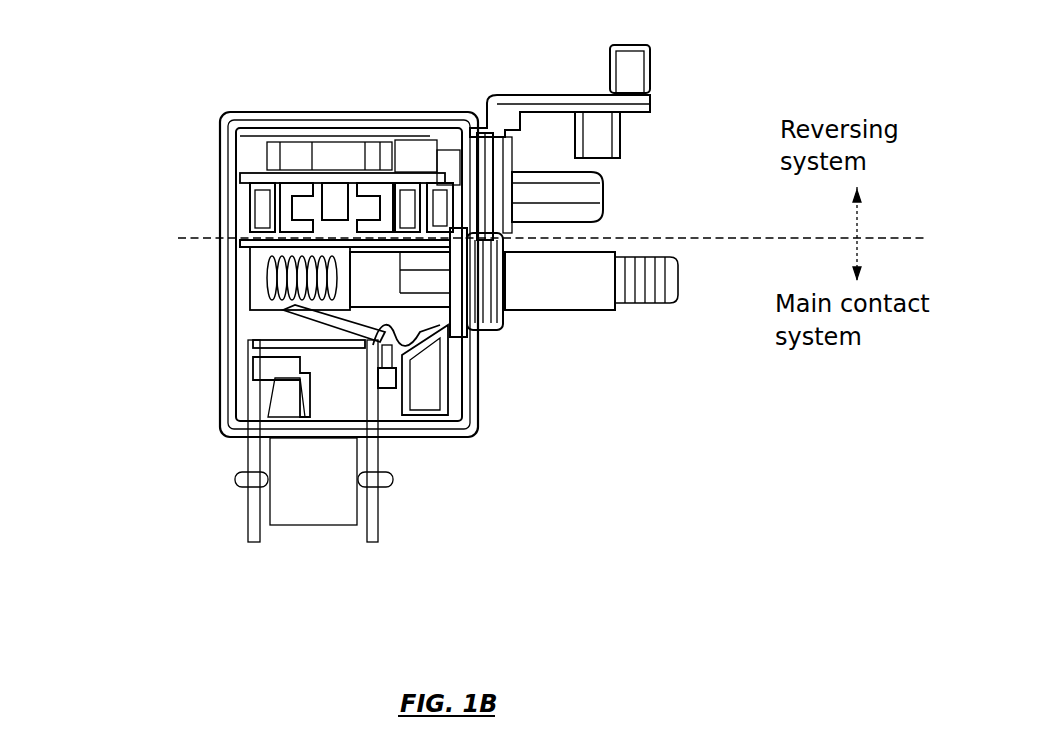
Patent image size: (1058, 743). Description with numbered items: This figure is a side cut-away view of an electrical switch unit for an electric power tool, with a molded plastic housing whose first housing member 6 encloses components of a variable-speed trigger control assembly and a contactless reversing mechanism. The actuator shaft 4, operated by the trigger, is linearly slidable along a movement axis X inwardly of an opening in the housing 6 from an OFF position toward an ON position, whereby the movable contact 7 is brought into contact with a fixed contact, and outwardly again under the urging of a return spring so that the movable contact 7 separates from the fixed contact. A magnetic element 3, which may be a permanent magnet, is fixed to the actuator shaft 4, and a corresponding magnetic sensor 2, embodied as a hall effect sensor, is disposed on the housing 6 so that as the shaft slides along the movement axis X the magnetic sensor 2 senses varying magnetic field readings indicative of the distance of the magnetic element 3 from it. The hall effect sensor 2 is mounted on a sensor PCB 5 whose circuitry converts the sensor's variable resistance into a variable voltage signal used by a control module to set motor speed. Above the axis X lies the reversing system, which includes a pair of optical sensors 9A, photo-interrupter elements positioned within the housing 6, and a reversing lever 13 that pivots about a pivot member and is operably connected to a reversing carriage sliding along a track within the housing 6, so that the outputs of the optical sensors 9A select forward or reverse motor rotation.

The movement axis X is at (173, 232).
The magnetic sensor 2 is at (237, 300).
The magnetic element 3 is at (377, 277).
The actuator shaft 4 is at (572, 282).
The sensor PCB 5 is at (238, 232).
The first housing member 6 is at (582, 193).
The movable contact 7 is at (290, 315).
The optical sensors 9A is at (412, 205).
The reversing lever 13 is at (595, 105).